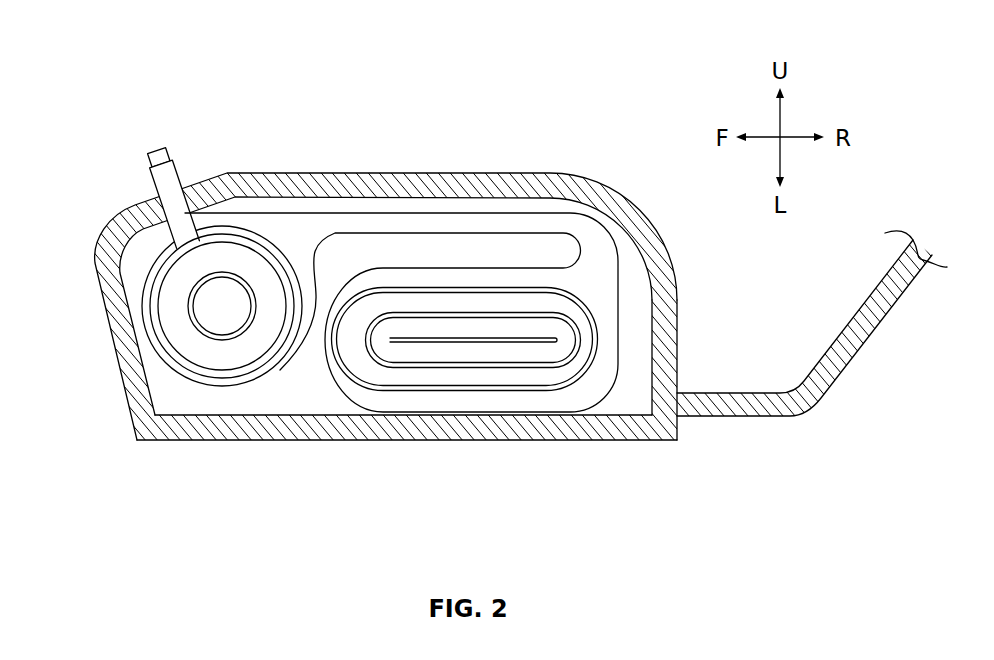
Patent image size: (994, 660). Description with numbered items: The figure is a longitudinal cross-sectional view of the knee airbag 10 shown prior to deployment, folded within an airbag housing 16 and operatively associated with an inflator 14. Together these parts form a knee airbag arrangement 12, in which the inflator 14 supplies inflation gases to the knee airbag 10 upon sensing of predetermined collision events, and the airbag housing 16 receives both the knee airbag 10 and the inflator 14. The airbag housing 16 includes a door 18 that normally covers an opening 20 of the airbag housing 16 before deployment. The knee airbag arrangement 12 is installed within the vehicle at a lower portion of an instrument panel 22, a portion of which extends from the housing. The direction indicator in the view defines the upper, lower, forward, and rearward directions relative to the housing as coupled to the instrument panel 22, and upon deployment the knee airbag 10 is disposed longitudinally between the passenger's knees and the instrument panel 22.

The knee airbag 10 is at (604, 310).
The knee airbag arrangement 12 is at (541, 91).
The inflator 14 is at (170, 313).
The airbag housing 16 is at (110, 233).
The door 18 is at (353, 441).
The opening 20 is at (650, 390).
The instrument panel 22 is at (880, 317).